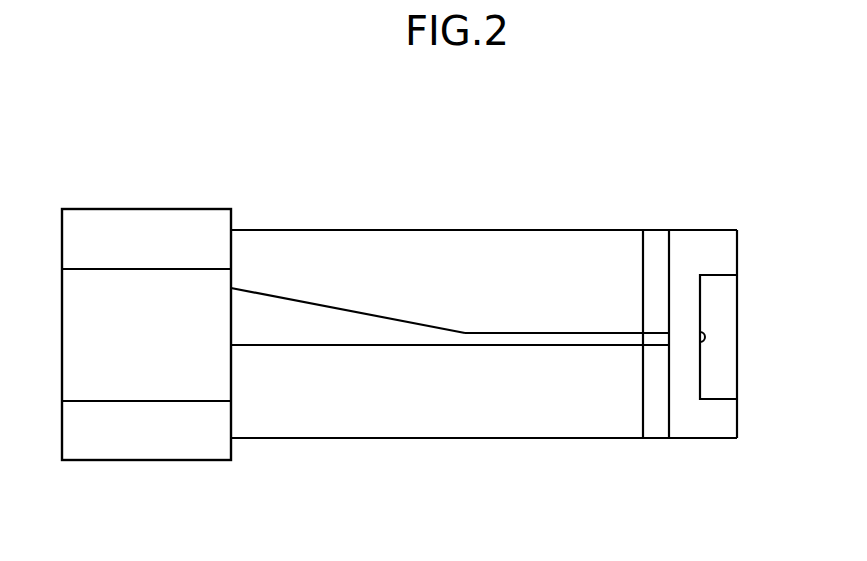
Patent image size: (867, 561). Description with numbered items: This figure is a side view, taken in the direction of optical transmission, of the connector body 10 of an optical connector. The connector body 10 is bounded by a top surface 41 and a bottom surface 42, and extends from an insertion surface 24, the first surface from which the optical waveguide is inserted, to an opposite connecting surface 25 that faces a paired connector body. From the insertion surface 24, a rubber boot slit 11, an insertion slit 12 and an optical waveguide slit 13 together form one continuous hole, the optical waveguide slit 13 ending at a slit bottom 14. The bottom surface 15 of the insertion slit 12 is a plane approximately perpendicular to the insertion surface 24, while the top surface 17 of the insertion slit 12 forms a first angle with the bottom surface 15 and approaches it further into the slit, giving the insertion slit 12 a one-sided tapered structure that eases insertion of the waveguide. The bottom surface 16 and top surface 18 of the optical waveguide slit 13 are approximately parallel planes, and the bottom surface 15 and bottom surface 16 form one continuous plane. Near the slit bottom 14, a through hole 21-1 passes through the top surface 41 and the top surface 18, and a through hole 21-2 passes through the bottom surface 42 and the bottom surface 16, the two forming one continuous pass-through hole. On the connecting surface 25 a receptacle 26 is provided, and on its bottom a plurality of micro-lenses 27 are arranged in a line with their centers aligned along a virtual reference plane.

The connector body 10 is at (383, 152).
The rubber boot slit 11 is at (146, 268).
The insertion slit 12 is at (352, 307).
The optical waveguide slit 13 is at (518, 333).
The slit bottom 14 is at (671, 337).
The bottom surface of the insertion slit 15 is at (342, 338).
The bottom surface of the optical waveguide slit 16 is at (490, 339).
The top surface of the insertion slit 17 is at (270, 292).
The top surface of the optical waveguide slit 18 is at (550, 334).
The through hole 21-1 is at (652, 242).
The through hole 21-2 is at (657, 427).
The insertion surface 24 is at (62, 228).
The connecting surface 25 is at (737, 243).
The receptacle 26 is at (712, 277).
The micro-lenses 27 is at (705, 338).
The top surface of the connector body 41 is at (397, 230).
The bottom surface of the connector body 42 is at (387, 440).